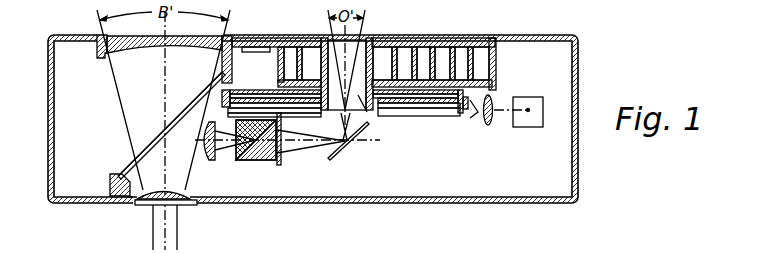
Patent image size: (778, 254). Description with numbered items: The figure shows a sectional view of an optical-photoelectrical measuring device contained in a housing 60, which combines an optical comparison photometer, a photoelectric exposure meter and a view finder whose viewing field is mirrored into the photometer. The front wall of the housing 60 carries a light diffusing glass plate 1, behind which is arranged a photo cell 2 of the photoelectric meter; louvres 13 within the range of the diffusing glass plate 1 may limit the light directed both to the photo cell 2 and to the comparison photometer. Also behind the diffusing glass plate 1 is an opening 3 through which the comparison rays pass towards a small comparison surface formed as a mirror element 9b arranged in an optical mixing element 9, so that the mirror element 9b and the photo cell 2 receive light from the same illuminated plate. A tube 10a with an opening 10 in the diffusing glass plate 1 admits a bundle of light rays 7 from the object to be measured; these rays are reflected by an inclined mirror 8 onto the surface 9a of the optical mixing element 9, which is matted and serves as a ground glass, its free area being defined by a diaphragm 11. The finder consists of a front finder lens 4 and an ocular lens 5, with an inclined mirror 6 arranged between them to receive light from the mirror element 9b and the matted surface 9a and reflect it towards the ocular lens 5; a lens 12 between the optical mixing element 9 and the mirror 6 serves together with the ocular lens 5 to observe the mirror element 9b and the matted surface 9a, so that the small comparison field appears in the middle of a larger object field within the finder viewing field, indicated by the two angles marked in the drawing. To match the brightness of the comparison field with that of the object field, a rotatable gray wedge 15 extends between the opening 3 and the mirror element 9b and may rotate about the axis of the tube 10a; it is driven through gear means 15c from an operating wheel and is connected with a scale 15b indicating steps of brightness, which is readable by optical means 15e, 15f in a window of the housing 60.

The light diffusing glass plate 1 is at (440, 42).
The photo cell 2 is at (462, 80).
The opening 3 is at (262, 47).
The finder lens 4 is at (110, 42).
The ocular lens 5 is at (150, 206).
The inclined mirror 6 is at (153, 141).
The bundle of light rays 7 is at (353, 60).
The inclined mirror 8 is at (340, 160).
The optical mixing element 9 is at (263, 161).
The matted surface 9a is at (277, 147).
The mirror element 9b is at (252, 160).
The opening 10 is at (354, 38).
The tube 10a is at (361, 99).
The diaphragm 11 is at (279, 164).
The lens 12 is at (213, 162).
The louvres 13 is at (399, 56).
The gray wedge 15 is at (410, 96).
The scale 15b is at (463, 113).
The gear means 15c is at (478, 116).
The optical means 15e is at (490, 97).
The optical means 15f is at (530, 100).
The housing 60 is at (557, 172).